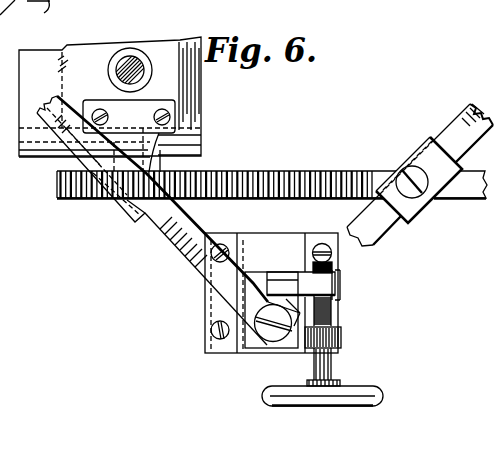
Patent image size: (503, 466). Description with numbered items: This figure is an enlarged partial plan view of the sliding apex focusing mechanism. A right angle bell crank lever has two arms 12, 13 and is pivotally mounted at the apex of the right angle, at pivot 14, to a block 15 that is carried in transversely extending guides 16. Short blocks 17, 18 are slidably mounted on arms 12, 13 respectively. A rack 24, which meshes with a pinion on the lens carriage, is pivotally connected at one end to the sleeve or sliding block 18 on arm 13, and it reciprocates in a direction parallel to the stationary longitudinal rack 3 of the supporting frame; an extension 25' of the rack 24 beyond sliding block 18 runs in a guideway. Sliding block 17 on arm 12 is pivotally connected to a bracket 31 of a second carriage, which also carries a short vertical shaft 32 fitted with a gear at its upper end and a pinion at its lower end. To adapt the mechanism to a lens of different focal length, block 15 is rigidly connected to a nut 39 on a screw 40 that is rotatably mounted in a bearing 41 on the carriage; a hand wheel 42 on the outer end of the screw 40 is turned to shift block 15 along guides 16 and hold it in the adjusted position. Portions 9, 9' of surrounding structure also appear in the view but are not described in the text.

The longitudinal rack 3 is at (0, 341).
The frame block 9 is at (100, 104).
The frame portion 9' is at (32, 15).
The arm 12 is at (160, 233).
The arm 13 is at (468, 113).
The apex pivot 14 is at (268, 335).
The block 15 is at (260, 275).
The transversely extending guides 16 is at (298, 233).
The short block 17 is at (128, 213).
The short block 18 is at (438, 167).
The rack 24 is at (280, 170).
The extension of rack 25' is at (466, 175).
The bracket 31 is at (152, 156).
The short vertical shaft 32 is at (137, 60).
The nut 39 is at (340, 280).
The screw 40 is at (331, 310).
The bearing 41 is at (341, 337).
The hand wheel 42 is at (370, 392).